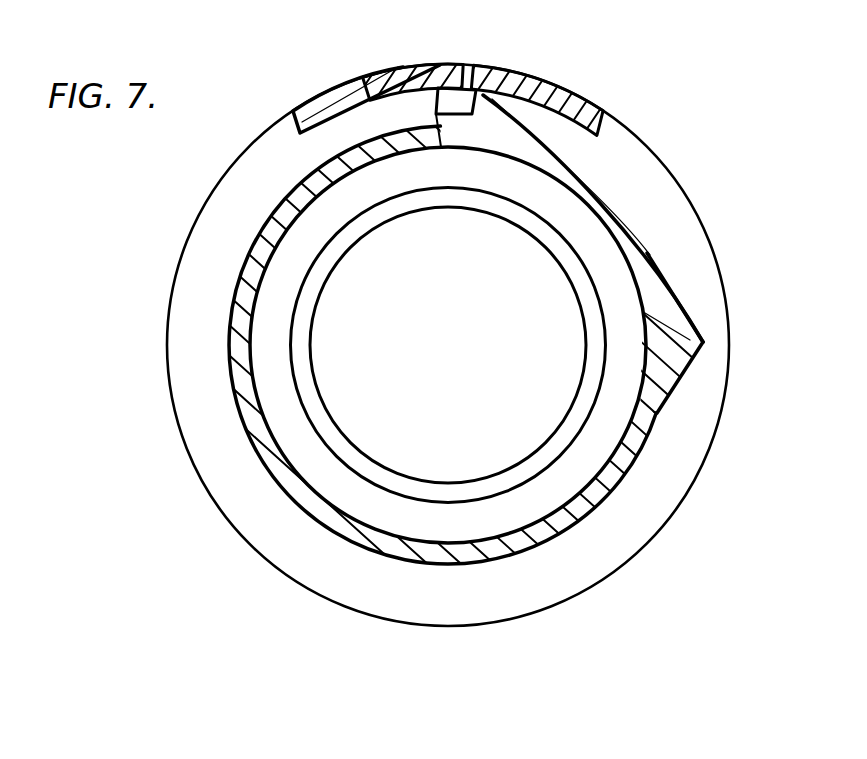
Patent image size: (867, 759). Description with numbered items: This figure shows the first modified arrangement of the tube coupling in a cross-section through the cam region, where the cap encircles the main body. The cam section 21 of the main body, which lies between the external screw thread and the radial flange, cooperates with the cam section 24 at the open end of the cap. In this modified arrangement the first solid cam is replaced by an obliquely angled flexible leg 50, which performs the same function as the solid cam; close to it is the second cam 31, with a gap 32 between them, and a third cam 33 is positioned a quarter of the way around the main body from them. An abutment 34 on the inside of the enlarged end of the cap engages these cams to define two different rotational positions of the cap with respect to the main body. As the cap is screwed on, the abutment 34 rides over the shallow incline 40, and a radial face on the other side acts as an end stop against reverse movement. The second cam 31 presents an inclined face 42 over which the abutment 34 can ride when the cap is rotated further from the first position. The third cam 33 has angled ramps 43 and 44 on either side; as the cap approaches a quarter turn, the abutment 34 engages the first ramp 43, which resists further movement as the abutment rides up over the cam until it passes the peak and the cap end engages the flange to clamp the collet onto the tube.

The cam section 21 is at (233, 270).
The cam section 24 is at (403, 73).
The second cam 31 is at (503, 90).
The gap 32 is at (435, 100).
The third cam 33 is at (690, 343).
The abutment 34 is at (440, 86).
The shallow incline 40 is at (317, 167).
The inclined face 42 is at (490, 105).
The first ramp 43 is at (680, 295).
The second ramp 44 is at (685, 385).
The flexible leg 50 is at (405, 82).